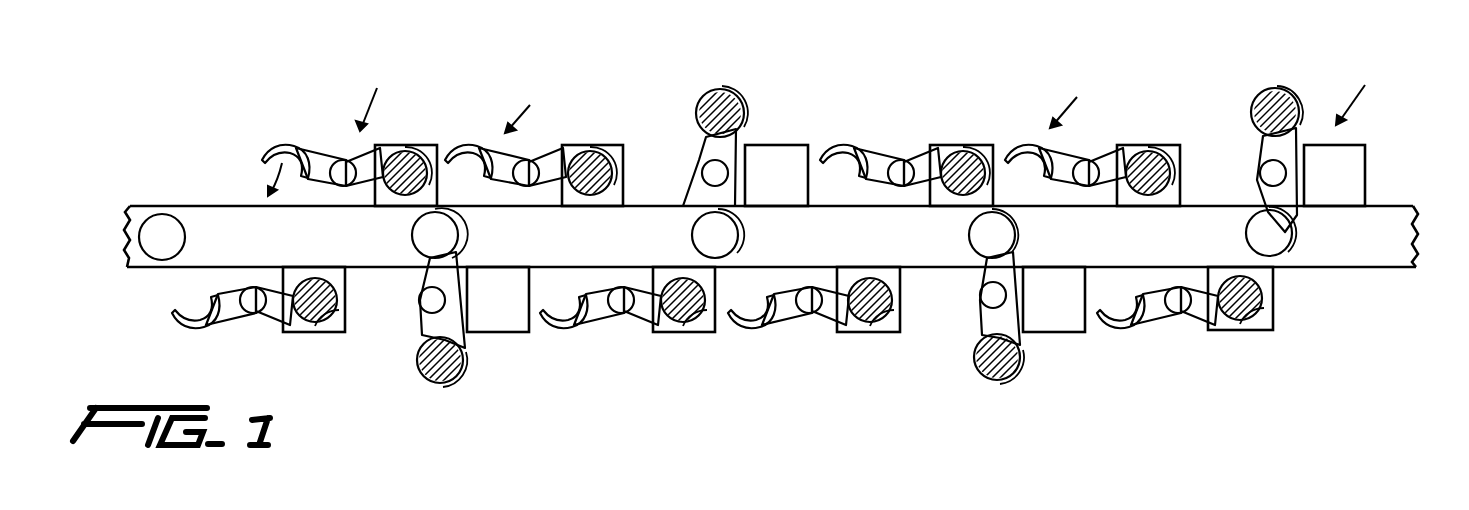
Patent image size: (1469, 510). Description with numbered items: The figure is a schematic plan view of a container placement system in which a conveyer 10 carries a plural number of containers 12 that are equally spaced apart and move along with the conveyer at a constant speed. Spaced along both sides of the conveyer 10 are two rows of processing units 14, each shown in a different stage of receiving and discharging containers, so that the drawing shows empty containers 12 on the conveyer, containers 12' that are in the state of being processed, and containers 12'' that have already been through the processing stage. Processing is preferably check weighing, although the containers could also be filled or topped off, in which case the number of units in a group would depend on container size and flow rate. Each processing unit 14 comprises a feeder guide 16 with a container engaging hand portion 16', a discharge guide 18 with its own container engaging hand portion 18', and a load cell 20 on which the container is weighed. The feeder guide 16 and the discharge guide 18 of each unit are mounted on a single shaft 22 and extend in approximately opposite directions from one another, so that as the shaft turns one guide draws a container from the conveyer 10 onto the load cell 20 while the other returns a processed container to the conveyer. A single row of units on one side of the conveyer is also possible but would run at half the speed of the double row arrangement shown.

The conveyer 10 is at (197, 215).
The container 12 is at (685, 260).
The container 12' is at (792, 236).
The container 12'' is at (860, 224).
The processing unit 14 is at (823, 124).
The feeder guide 16 is at (693, 249).
The container engaging hand portion 16' is at (645, 223).
The discharge guide 18 is at (776, 227).
The container engaging hand portion 18' is at (841, 221).
The load cell 20 is at (441, 150).
The shaft 22 is at (338, 190).